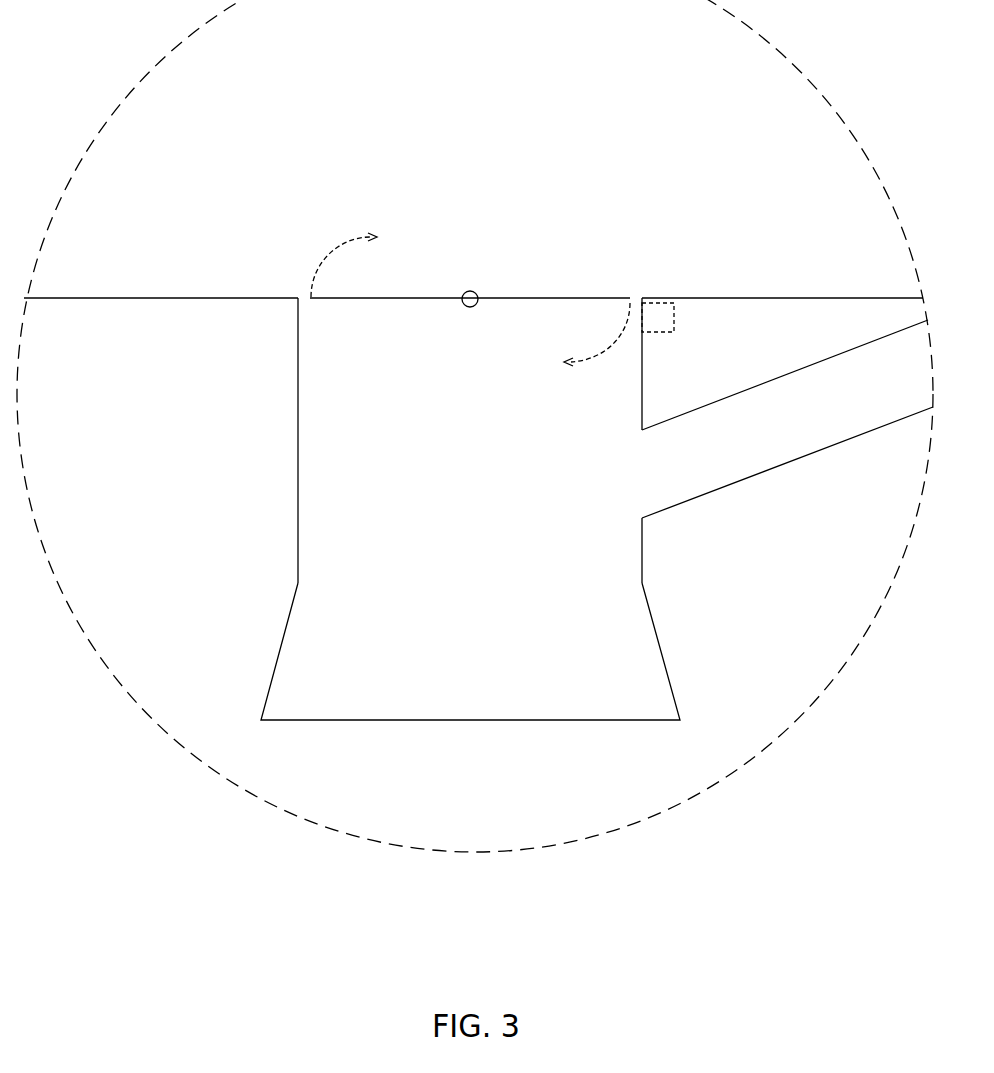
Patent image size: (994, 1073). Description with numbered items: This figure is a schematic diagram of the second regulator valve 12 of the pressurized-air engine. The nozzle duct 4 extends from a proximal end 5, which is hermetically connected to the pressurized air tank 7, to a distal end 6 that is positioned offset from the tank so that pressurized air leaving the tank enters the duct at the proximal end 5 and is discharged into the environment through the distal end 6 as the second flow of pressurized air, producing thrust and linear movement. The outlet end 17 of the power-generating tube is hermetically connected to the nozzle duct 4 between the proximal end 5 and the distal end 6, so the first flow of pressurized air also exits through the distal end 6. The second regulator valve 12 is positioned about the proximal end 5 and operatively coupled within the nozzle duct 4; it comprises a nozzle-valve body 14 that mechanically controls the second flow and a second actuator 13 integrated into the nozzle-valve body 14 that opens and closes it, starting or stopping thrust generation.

The nozzle duct 4 is at (302, 462).
The proximal end 5 is at (288, 320).
The distal end 6 is at (254, 687).
The pressurized air tank 7 is at (80, 293).
The second regulator valve 12 is at (535, 234).
The second actuator 13 is at (674, 312).
The nozzle-valve body 14 is at (470, 307).
The outlet end 17 is at (673, 506).